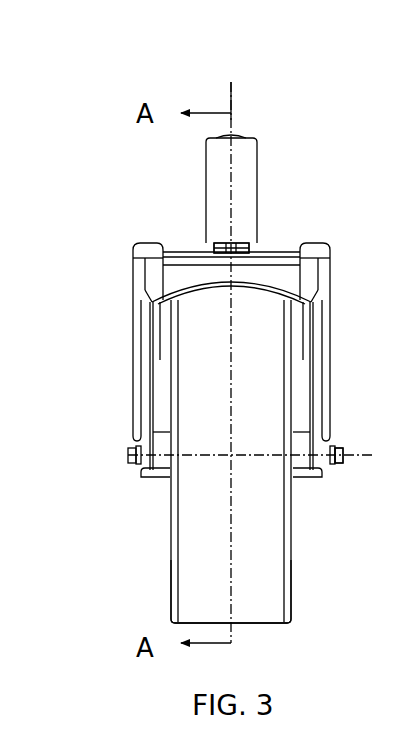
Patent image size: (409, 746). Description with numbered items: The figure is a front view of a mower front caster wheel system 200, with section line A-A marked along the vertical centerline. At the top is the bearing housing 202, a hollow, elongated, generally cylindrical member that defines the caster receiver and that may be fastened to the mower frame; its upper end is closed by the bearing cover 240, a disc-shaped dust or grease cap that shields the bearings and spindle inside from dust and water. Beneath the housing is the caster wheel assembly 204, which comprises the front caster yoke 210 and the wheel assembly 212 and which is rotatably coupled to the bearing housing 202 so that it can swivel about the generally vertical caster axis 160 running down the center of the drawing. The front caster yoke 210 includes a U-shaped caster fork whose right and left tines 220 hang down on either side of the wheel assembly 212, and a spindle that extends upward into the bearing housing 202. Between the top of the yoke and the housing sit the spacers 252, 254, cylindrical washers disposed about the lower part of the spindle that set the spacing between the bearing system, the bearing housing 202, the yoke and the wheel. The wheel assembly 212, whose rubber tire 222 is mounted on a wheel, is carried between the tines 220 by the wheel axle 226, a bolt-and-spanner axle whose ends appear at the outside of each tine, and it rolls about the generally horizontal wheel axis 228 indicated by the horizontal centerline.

The caster axis 160 is at (234, 101).
The front caster wheel system 200 is at (323, 138).
The bearing housing 202 is at (203, 188).
The caster wheel assembly 204 is at (160, 230).
The front caster yoke 210 is at (302, 234).
The wheel assembly 212 is at (296, 628).
The right and left tines 220 is at (148, 481).
The tire 222 is at (293, 585).
The wheel axle 226 is at (336, 442).
The wheel axis 228 is at (358, 450).
The bearing cover 240 is at (248, 134).
The spacer 252 is at (242, 238).
The spacer 254 is at (231, 248).